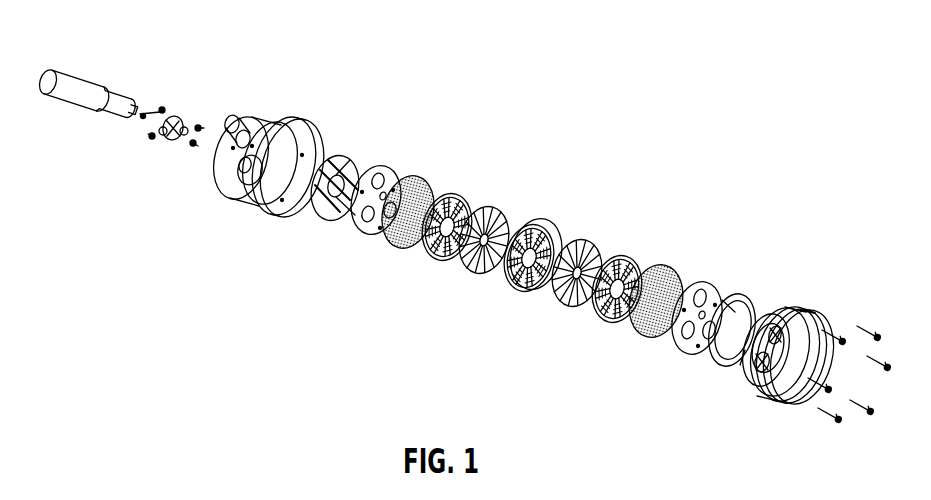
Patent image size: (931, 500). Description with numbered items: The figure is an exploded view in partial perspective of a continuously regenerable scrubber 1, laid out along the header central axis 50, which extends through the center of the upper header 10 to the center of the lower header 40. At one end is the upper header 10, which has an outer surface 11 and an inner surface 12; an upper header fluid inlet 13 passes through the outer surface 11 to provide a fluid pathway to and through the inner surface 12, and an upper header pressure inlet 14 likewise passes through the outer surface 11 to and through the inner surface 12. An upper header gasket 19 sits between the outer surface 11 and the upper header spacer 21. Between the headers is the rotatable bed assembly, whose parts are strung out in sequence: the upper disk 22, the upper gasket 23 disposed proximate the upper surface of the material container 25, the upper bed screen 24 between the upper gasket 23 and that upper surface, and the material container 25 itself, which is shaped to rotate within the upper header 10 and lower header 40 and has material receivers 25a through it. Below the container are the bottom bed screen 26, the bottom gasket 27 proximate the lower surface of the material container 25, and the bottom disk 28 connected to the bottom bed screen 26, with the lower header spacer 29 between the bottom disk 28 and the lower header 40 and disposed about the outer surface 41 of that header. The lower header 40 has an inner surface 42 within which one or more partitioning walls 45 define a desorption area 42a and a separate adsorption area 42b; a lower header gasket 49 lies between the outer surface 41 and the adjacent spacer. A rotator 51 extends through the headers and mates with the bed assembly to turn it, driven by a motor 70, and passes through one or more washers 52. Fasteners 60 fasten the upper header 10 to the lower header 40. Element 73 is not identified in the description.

The continuously regenerable scrubber 1 is at (340, 360).
The upper header 10 is at (255, 140).
The outer surface 11 is at (222, 174).
The inner surface 12 is at (276, 105).
The upper header fluid inlet 13 is at (249, 163).
The upper header pressure inlet 14 is at (238, 121).
The upper header gasket 19 is at (343, 160).
The upper header spacer 21 is at (378, 170).
The upper disk 22 is at (397, 235).
The upper gasket 23 is at (453, 200).
The upper bed screen 24 is at (470, 258).
The material container 25 is at (512, 254).
The material receivers 25a is at (536, 230).
The bottom bed screen 26 is at (565, 302).
The bottom gasket 27 is at (620, 262).
The bottom disk 28 is at (664, 270).
The lower header spacer 29 is at (708, 287).
The lower header 40 is at (777, 320).
The outer surface 41 is at (785, 285).
The inner surface 42 is at (752, 364).
The desorption area 42a is at (770, 315).
The adsorption area 42b is at (760, 385).
The partitioning wall 45 is at (789, 305).
The lower header gasket 49 is at (714, 352).
The header central axis 50 is at (36, 63).
The rotator 51 is at (524, 222).
The washers 52 is at (176, 118).
The fasteners 60 is at (830, 338).
The motor 70 is at (73, 88).
The shaft end 73 is at (115, 103).